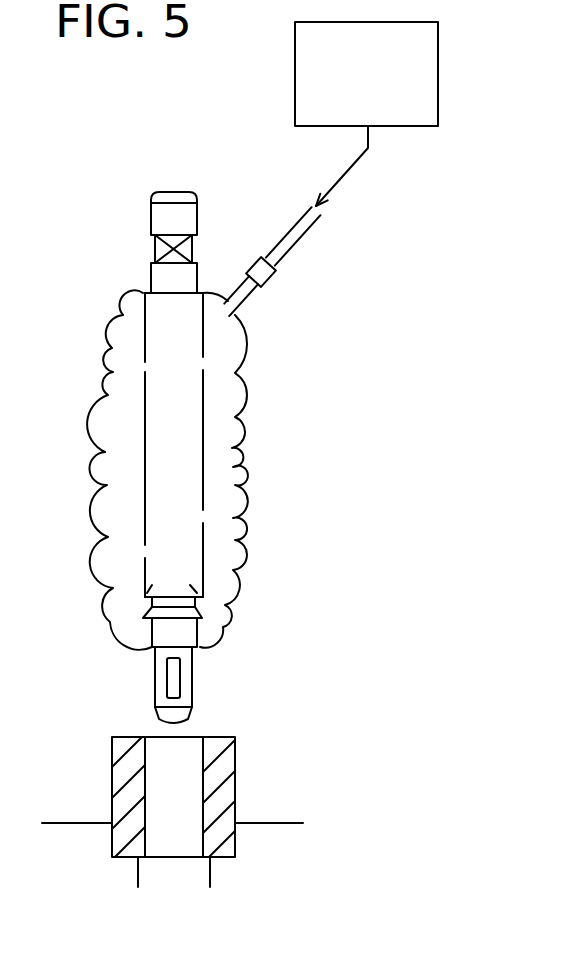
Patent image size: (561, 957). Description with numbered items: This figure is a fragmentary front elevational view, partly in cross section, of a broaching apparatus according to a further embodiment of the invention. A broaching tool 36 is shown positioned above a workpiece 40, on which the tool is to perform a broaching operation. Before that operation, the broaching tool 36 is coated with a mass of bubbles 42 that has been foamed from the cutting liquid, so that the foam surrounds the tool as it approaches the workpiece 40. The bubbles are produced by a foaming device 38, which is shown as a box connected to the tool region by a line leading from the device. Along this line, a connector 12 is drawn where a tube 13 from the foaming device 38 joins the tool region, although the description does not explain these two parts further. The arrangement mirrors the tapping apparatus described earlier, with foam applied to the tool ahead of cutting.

The connector 12 is at (263, 275).
The supply tube 13 is at (340, 180).
The broaching tool 36 is at (163, 215).
The foaming device 38 is at (393, 115).
The workpiece 40 is at (227, 792).
The mass of bubbles 42 is at (232, 392).